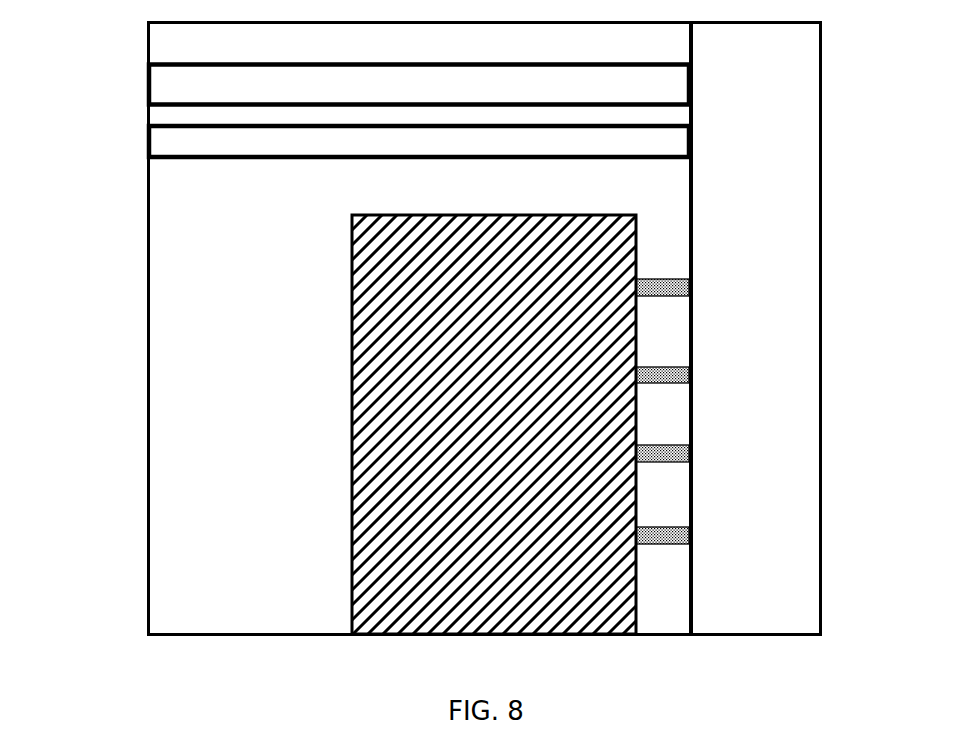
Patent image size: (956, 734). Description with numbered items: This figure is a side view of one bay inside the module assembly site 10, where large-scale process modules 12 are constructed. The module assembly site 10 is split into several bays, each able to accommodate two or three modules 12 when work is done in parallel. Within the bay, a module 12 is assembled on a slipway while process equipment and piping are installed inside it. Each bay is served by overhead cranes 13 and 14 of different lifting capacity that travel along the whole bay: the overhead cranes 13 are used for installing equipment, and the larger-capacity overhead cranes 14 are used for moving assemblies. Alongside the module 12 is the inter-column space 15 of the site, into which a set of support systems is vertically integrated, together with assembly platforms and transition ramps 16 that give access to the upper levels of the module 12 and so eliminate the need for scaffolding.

The module assembly site 10 is at (485, 329).
The process module 12 is at (351, 425).
The overhead crane 13 is at (147, 140).
The overhead crane 14 is at (147, 83).
The inter-column space 15 is at (770, 197).
The connection tabs 16 is at (693, 292).